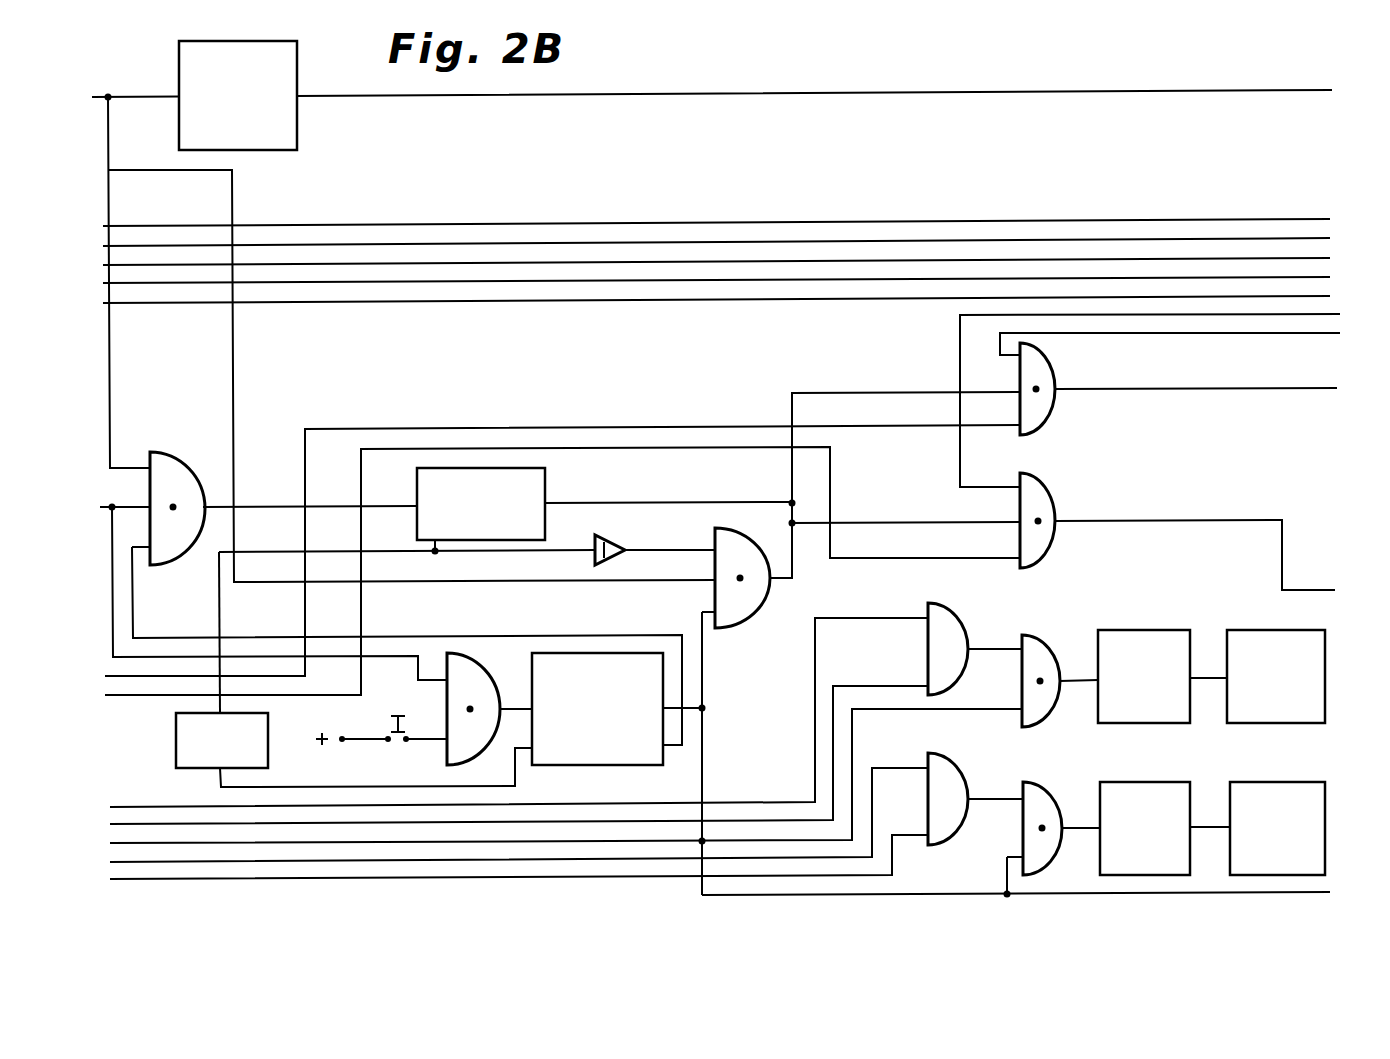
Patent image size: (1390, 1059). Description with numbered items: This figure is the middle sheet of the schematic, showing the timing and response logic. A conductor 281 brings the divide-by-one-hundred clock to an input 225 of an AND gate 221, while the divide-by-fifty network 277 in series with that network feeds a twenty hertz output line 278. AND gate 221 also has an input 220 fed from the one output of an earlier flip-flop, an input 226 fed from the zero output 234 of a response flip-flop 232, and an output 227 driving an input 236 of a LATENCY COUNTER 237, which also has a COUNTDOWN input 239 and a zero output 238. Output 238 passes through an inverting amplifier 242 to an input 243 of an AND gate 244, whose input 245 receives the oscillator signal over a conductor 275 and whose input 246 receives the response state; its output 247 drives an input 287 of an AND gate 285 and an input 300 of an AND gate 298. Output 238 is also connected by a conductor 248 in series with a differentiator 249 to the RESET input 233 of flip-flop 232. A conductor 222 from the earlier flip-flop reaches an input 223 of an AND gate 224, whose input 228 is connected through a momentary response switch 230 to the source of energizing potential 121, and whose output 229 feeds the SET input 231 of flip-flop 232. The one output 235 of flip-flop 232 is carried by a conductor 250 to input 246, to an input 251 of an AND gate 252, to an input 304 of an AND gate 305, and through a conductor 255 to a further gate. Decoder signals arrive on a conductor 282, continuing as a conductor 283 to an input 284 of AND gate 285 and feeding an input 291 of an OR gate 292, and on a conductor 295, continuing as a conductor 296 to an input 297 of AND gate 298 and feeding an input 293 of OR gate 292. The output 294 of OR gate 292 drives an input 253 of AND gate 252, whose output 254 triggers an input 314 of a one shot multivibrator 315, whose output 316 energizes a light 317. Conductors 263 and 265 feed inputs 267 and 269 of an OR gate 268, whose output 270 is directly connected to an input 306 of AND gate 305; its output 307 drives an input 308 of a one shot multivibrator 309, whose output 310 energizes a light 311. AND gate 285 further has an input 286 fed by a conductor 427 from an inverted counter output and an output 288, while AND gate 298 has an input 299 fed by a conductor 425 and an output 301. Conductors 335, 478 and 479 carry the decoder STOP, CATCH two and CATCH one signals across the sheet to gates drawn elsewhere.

The divide-by-50 network 277 is at (297, 45).
The 20 hz output line 278 is at (700, 92).
The conductor 281 is at (108, 133).
The conductor 275 is at (104, 170).
The conductor 335 is at (103, 226).
The conductor 478 is at (103, 246).
The conductor 479 is at (103, 265).
The conductor 295 is at (103, 283).
The conductor 282 is at (103, 303).
The conductor 425 is at (1350, 309).
The conductor 427 is at (1350, 328).
The AND gate 221 is at (178, 460).
The input 225 is at (150, 468).
The input 220 is at (150, 507).
The output 227 is at (205, 495).
The input 226 is at (147, 550).
The conductor 222 is at (113, 637).
The conductor 283 is at (105, 676).
The conductor 296 is at (105, 695).
The conductor 248 is at (219, 609).
The LATENCY COUNTER 237 is at (545, 472).
The input 236 is at (417, 503).
The COUNTDOWN input 239 is at (550, 503).
The "0" output 238 is at (433, 551).
The inverting amplifier 242 is at (622, 545).
The input 243 is at (715, 550).
The input 245 is at (715, 580).
The input 246 is at (715, 612).
The output 247 is at (760, 582).
The AND gate 244 is at (755, 545).
The AND gate 224 is at (478, 668).
The input 223 is at (440, 683).
The output 229 is at (508, 698).
The SET input 231 is at (528, 712).
The input 228 is at (440, 742).
The source of energizing potential 121 is at (340, 743).
The momentary response switch 230 is at (390, 729).
The response flip-flop 232 is at (602, 766).
The RESET input 233 is at (530, 762).
The "0" output 234 is at (668, 755).
The "1" output 235 is at (668, 700).
The conductor 250 is at (705, 765).
The differentiator 249 is at (176, 748).
The conductor 255 is at (110, 843).
The conductor 263 is at (110, 862).
The conductor 265 is at (110, 879).
The OR gate 292 is at (950, 618).
The input 291 is at (928, 618).
The input 293 is at (928, 686).
The output 294 is at (962, 655).
The input 253 is at (1022, 649).
The AND gate 252 is at (1038, 640).
The input 251 is at (1022, 712).
The output 254 is at (1056, 684).
The input 314 is at (1092, 678).
The one shot multivibrator 315 is at (1130, 630).
The output 316 is at (1195, 678).
The light 317 is at (1262, 630).
The OR gate 268 is at (952, 770).
The input 267 is at (928, 768).
The input 269 is at (928, 835).
The output 270 is at (965, 805).
The input 306 is at (1023, 799).
The AND gate 305 is at (1042, 790).
The output 307 is at (1065, 822).
The input 304 is at (1023, 857).
The input 308 is at (1062, 838).
The one shot multivibrator 309 is at (1135, 782).
The output 310 is at (1197, 827).
The light 311 is at (1268, 782).
The AND gate 285 is at (1050, 372).
The input 286 is at (1015, 358).
The input 287 is at (1015, 394).
The input 284 is at (1015, 428).
The output 288 is at (1055, 392).
The AND gate 298 is at (1050, 498).
The input 299 is at (1020, 487).
The input 300 is at (1020, 522).
The input 297 is at (1020, 558).
The output 301 is at (1055, 524).